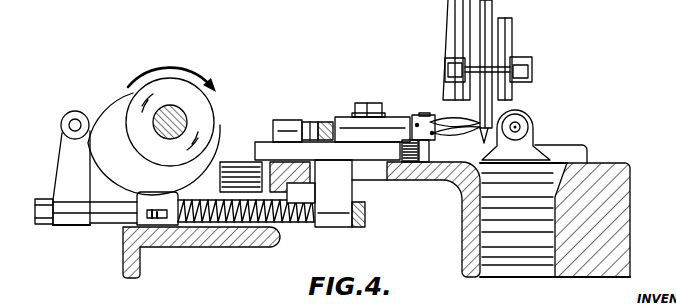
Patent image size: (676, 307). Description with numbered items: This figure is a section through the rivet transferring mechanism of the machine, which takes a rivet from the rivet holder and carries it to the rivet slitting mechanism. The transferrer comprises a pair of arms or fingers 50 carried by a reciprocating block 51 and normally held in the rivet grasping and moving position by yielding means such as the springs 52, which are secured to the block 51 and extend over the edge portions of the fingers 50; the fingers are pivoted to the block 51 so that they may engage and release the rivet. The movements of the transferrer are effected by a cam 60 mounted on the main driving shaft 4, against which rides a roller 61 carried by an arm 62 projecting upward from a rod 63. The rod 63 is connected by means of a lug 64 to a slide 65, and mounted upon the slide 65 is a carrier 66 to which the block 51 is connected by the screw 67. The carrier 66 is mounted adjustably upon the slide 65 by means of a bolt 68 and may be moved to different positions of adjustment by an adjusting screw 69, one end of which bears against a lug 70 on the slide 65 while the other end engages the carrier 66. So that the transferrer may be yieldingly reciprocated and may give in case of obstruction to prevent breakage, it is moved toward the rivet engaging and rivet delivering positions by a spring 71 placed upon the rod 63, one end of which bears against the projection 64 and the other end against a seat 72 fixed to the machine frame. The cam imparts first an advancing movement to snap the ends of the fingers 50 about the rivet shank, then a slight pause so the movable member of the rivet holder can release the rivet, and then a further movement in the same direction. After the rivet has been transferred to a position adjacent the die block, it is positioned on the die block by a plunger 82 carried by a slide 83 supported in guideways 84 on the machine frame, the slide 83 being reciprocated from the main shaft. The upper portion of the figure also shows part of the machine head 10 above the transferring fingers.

The main driving shaft 4 is at (186, 116).
The needle bar head 10 is at (488, 15).
The arms or fingers 50 is at (471, 131).
The reciprocating block 51 is at (413, 115).
The springs 52 is at (429, 117).
The cam 60 is at (105, 122).
The roller 61 is at (62, 113).
The arm 62 is at (66, 165).
The rod 63 is at (107, 209).
The lug 64 is at (343, 188).
The slide 65 is at (327, 120).
The carrier 66 is at (393, 123).
The screw 67 is at (459, 93).
The bolt 68 is at (360, 103).
The adjusting screw 69 is at (311, 120).
The lug 70 is at (252, 101).
The spring 71 is at (303, 224).
The seat 72 is at (170, 212).
The plunger 82 is at (525, 117).
The slide 83 is at (527, 147).
The guideways 84 is at (497, 163).